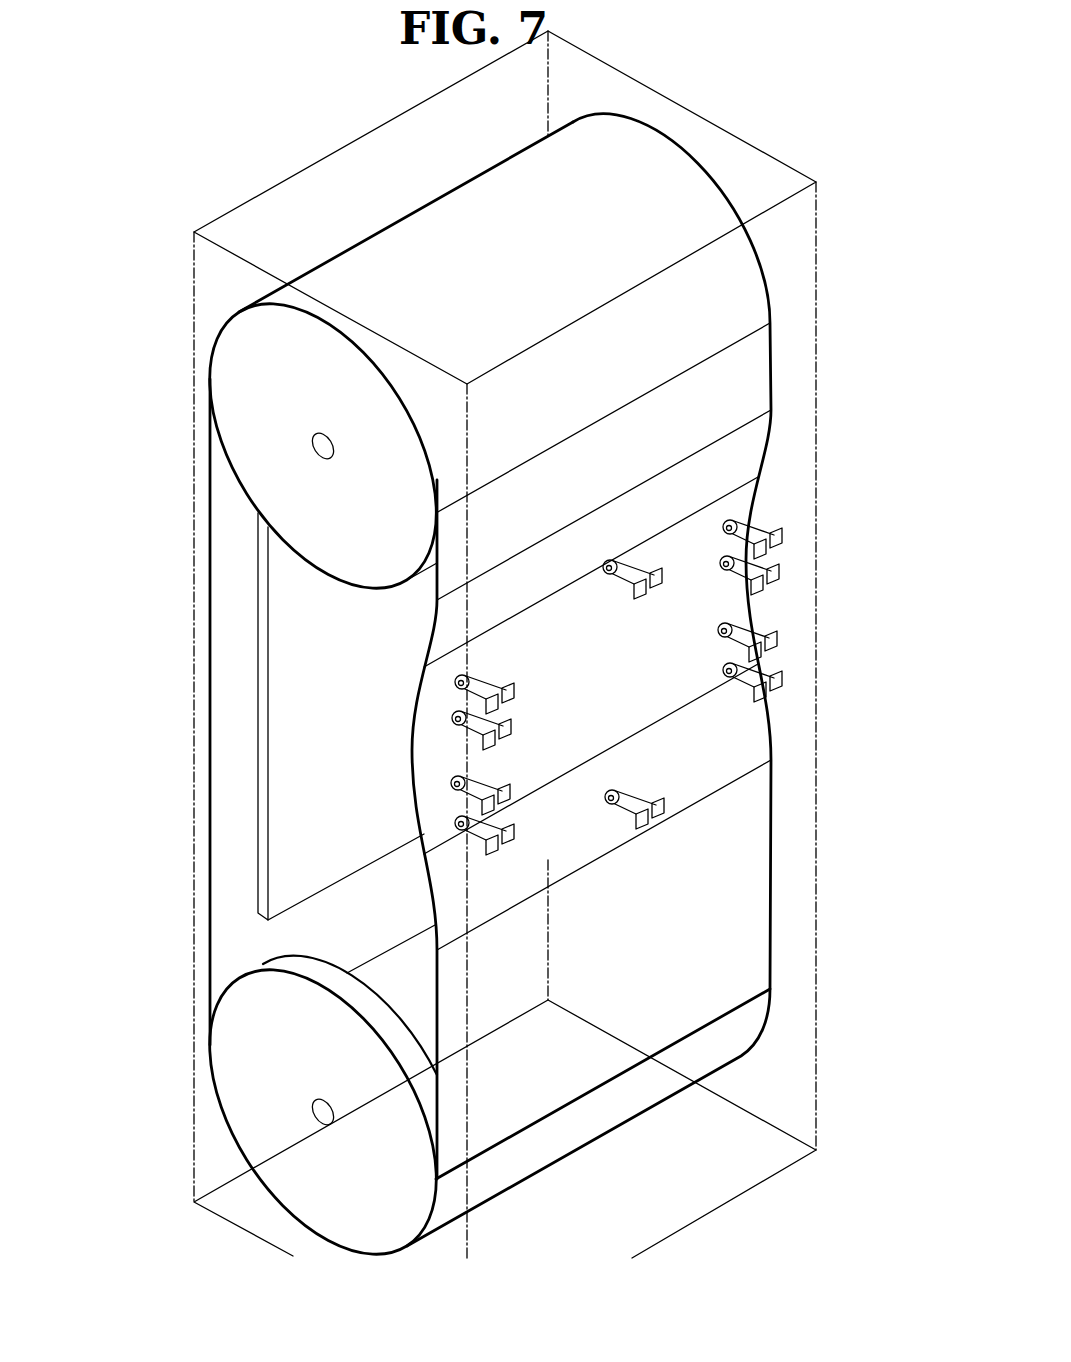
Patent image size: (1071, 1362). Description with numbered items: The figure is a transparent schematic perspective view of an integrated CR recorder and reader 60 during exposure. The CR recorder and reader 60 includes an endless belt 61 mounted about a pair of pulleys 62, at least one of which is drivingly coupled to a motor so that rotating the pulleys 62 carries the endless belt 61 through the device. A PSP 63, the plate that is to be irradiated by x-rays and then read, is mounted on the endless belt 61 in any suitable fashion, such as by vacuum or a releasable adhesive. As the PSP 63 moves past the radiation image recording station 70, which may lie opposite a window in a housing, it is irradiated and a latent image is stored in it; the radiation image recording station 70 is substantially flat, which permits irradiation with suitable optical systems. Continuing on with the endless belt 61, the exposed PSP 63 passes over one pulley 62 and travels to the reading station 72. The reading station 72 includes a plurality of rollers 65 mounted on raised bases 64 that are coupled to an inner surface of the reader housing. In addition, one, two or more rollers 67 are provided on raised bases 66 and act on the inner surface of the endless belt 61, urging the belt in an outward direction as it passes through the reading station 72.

The CR recorder and reader 60 is at (489, 704).
The endless belt 61 is at (203, 755).
The pulleys 62 is at (260, 410).
The PSP 63 is at (332, 704).
The raised bases 64 is at (644, 717).
The rollers 65 is at (443, 725).
The raised bases 66 is at (565, 537).
The rollers 67 is at (604, 540).
The radiation image recording station 70 is at (295, 607).
The reading station 72 is at (791, 511).